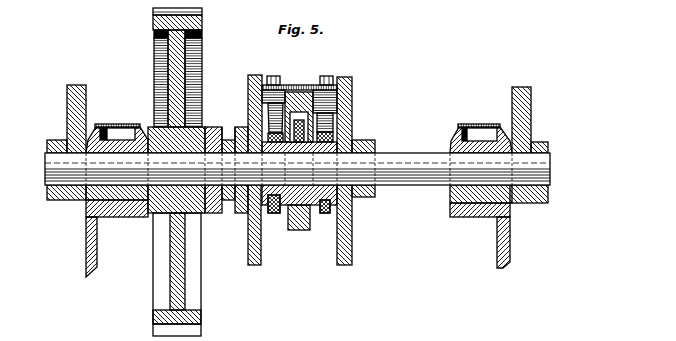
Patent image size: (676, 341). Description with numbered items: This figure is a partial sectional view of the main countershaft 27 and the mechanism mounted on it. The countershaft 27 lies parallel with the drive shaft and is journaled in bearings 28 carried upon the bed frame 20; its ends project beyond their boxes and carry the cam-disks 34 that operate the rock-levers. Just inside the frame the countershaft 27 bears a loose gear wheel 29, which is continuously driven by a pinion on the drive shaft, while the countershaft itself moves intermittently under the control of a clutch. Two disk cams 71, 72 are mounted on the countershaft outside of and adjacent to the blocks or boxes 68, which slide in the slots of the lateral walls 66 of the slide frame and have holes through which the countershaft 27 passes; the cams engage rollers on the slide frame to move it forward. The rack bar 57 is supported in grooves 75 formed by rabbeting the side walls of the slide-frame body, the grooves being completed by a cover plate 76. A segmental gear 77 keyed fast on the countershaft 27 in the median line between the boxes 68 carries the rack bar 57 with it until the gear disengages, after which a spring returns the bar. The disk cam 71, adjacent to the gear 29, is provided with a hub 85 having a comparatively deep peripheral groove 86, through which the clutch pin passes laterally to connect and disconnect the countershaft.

The bed frame 20 is at (98, 237).
The countershaft 27 is at (408, 163).
The bearings 28 is at (135, 125).
The loose gear wheel 29 is at (154, 32).
The cam-disks 34 is at (87, 89).
The rack bar 57 is at (335, 98).
The lateral walls 66 is at (330, 117).
The blocks or boxes 68 is at (275, 213).
The disk cam 71 is at (250, 87).
The disk cam 72 is at (353, 238).
The grooves 75 is at (304, 83).
The cover plate 76 is at (288, 83).
The segmental gear 77 is at (310, 231).
The hub 85 is at (233, 218).
The peripheral groove 86 is at (228, 130).